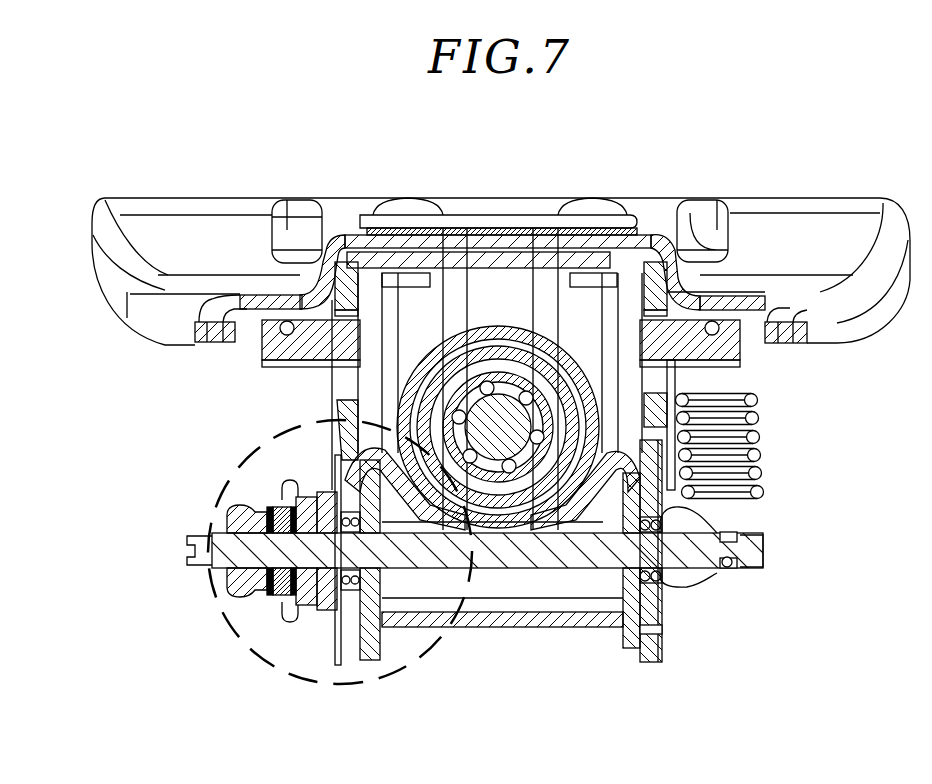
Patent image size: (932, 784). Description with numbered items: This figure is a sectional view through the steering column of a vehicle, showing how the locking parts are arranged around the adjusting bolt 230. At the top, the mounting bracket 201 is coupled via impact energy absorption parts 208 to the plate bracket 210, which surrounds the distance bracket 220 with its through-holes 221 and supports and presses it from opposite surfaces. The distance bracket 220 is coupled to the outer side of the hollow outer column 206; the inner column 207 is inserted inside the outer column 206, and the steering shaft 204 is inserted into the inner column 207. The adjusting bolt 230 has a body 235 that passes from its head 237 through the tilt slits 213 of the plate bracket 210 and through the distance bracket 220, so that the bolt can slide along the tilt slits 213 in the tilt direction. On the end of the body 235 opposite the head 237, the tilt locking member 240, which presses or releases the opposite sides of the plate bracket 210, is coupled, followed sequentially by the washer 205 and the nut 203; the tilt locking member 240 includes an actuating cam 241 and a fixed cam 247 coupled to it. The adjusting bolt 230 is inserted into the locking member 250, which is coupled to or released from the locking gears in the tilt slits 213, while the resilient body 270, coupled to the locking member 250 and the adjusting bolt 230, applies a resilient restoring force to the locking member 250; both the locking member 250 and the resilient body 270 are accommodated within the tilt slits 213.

The mounting bracket 201 is at (800, 222).
The nut 203 is at (232, 582).
The steering shaft 204 is at (477, 410).
The washer 205 is at (268, 595).
The outer column 206 is at (494, 335).
The inner column 207 is at (425, 248).
The impact energy absorption parts 208 is at (592, 210).
The plate bracket 210 is at (653, 658).
The tilt slits 213 is at (656, 624).
The distance bracket 220 is at (385, 618).
The through-holes 221 is at (630, 568).
The adjusting bolt 230 is at (765, 551).
The body 235 is at (515, 575).
The head 237 is at (670, 573).
The tilt locking member 240 is at (130, 457).
The actuating cam 241 is at (273, 497).
The fixed cam 247 is at (290, 478).
The locking member 250 is at (300, 600).
The resilient body 270 is at (340, 597).